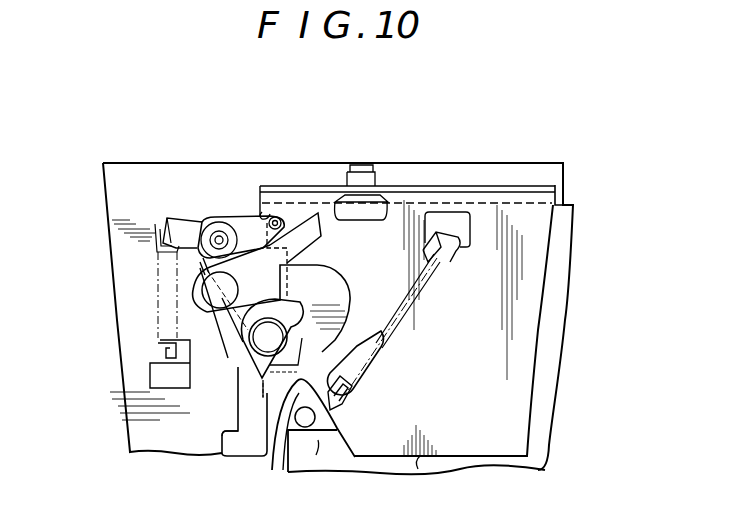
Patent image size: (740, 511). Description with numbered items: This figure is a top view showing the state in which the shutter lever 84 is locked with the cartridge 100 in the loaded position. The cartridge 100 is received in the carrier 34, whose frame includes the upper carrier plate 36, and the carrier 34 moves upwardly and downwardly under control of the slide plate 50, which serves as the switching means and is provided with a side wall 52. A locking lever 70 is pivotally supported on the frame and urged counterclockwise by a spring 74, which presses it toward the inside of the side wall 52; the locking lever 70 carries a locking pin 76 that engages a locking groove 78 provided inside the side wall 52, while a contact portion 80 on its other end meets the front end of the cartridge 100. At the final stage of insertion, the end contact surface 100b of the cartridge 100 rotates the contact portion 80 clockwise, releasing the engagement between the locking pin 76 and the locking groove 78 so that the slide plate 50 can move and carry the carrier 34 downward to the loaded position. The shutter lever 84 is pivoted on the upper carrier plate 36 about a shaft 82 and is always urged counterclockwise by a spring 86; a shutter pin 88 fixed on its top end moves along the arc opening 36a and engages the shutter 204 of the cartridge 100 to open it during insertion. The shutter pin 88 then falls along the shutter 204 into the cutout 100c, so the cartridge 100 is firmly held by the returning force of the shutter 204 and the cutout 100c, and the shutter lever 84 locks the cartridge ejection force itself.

The carrier 34 is at (458, 459).
The upper carrier plate 36 is at (522, 396).
The arc opening 36a is at (370, 352).
The slide plate 50 is at (553, 192).
The side wall 52 is at (490, 184).
The locking lever 70 is at (193, 224).
The spring 74 is at (160, 327).
The locking pin 76 is at (277, 210).
The locking groove 78 is at (313, 210).
The contact portion 80 is at (266, 338).
The shaft 82 is at (221, 315).
The shutter lever 84 is at (332, 295).
The spring 86 is at (433, 273).
The shutter pin 88 is at (272, 455).
The cartridge 100 is at (556, 258).
The groove 100b is at (326, 285).
The cutout 100c is at (283, 406).
The shutter 204 is at (320, 462).